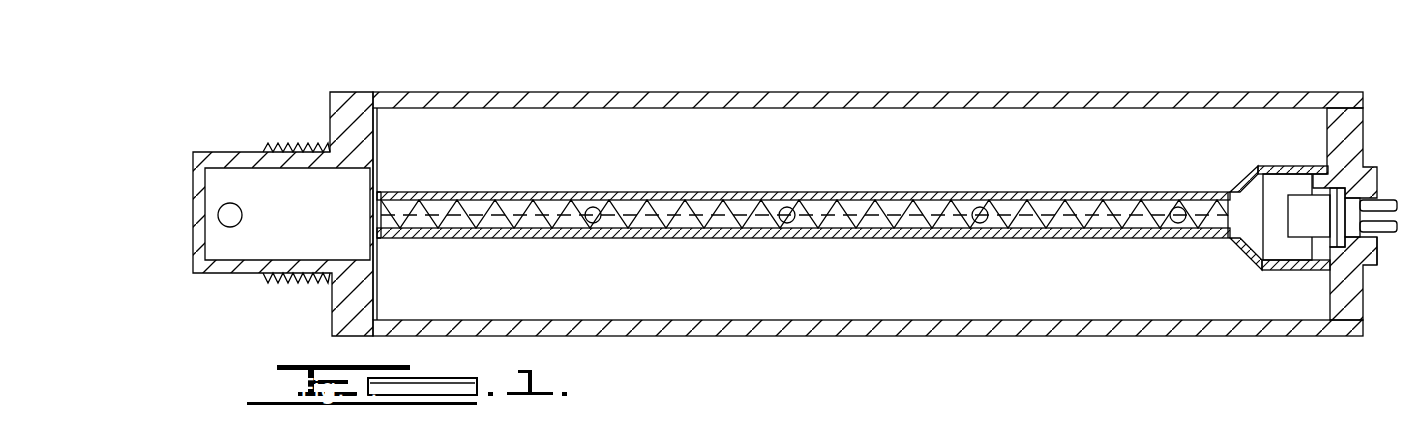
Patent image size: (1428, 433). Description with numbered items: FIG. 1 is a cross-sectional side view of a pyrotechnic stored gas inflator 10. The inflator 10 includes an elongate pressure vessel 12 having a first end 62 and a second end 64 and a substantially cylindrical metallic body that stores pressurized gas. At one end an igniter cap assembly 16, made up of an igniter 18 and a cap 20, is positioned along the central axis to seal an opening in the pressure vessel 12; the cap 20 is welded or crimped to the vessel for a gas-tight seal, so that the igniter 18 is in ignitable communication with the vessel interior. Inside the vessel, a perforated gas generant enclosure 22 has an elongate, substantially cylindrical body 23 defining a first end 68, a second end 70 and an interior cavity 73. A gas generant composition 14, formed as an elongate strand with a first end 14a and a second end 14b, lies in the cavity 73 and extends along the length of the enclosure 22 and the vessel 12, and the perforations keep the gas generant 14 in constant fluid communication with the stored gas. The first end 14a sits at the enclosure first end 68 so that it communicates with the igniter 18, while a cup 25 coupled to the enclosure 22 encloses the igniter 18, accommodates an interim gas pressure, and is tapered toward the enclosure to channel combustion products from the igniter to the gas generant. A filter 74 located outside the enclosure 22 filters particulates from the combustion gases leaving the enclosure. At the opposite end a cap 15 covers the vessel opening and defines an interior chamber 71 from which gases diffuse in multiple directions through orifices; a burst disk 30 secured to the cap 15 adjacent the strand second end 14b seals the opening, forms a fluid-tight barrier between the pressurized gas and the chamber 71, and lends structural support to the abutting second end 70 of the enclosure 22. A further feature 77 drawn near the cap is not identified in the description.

The stored gas inflator 10 is at (497, 66).
The pressure vessel 12 is at (812, 93).
The gas generant composition 14 is at (803, 210).
The first end of gas generant strand 14a is at (1212, 228).
The second end of gas generant strand 14b is at (378, 240).
The cap 15 is at (328, 313).
The igniter cap assembly 16 is at (1293, 187).
The igniter 18 is at (1308, 220).
The cap 20 is at (1347, 143).
The perforated gas generant enclosure 22 is at (998, 189).
The body of gas generant enclosure 23 is at (760, 238).
The cup 25 is at (1273, 166).
The burst disk 30 is at (384, 164).
The first end of pressure vessel 62 is at (1381, 281).
The second end of pressure vessel 64 is at (330, 100).
The first end of enclosure 68 is at (1227, 192).
The second end of enclosure 70 is at (380, 192).
The interior chamber 71 is at (277, 200).
The interior cavity 73 is at (711, 205).
The filter 74 is at (1040, 238).
The aperture 77 is at (228, 168).